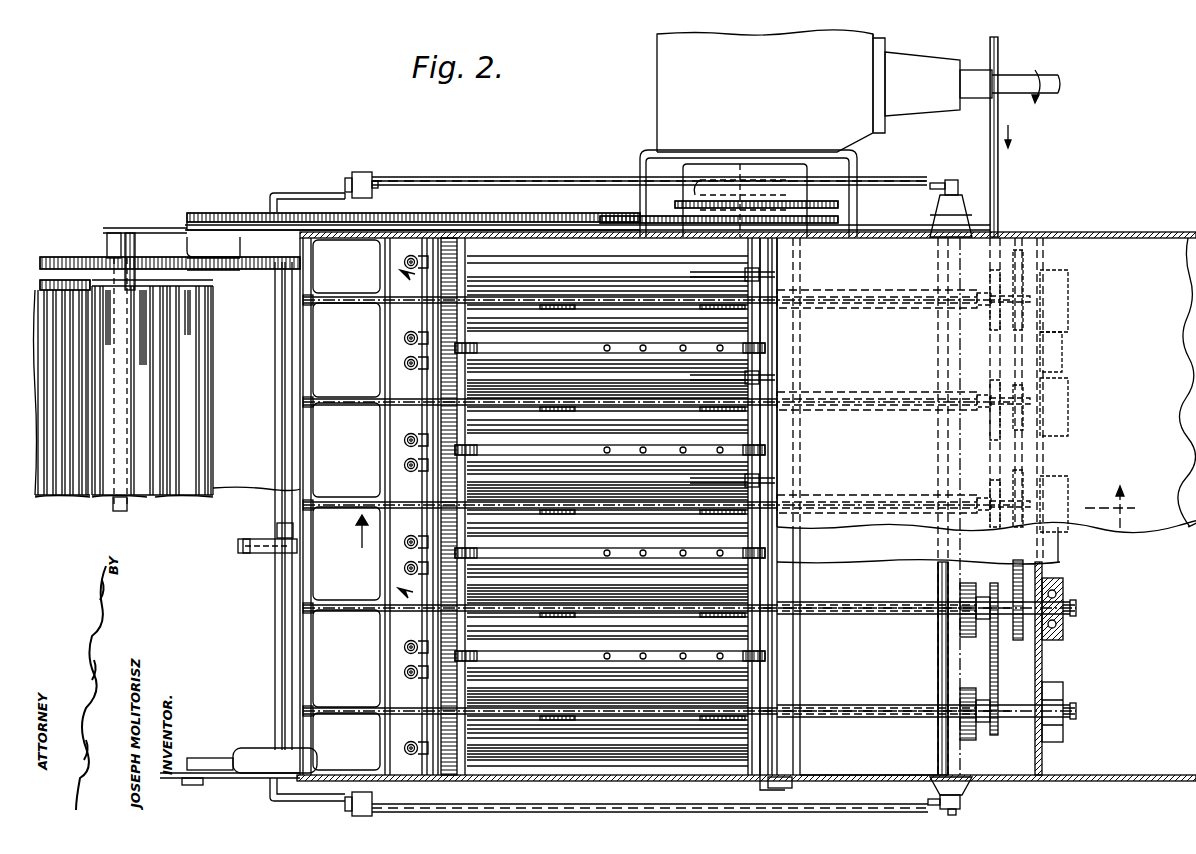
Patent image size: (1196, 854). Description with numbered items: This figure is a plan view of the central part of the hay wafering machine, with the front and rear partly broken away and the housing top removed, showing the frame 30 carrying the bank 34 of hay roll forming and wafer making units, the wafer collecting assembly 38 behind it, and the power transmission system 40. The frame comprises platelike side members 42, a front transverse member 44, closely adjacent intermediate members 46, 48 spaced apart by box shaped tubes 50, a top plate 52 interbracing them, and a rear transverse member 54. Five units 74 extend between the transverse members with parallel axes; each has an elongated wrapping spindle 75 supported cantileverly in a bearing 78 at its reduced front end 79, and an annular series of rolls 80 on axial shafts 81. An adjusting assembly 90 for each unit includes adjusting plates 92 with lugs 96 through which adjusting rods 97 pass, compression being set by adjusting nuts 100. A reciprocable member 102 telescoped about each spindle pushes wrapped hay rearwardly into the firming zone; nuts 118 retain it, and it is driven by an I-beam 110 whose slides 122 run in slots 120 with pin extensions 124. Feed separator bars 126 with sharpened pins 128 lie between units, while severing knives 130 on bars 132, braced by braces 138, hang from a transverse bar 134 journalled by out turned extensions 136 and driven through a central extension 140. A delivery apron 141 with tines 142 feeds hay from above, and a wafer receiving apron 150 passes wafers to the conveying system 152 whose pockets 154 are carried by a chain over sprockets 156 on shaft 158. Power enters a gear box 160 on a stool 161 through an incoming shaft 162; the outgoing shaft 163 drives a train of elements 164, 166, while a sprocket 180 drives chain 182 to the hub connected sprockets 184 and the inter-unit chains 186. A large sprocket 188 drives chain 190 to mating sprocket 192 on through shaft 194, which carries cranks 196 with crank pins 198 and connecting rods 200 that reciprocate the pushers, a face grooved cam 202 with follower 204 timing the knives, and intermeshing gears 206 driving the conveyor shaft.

The frame of machine 30 is at (1051, 235).
The bank of hay roll forming and wafer making units 34 is at (585, 256).
The wafer collecting assembly 38 is at (107, 512).
The power transmission system 40 is at (648, 97).
The side members of the frame 42 is at (155, 228).
The front transversely extending frame member 44 is at (1042, 665).
The intermediate transverse frame member 46 is at (770, 788).
The intermediate transverse frame member 48 is at (755, 766).
The box shaped tubes 50 is at (760, 787).
The top longitudinally extending plate 52 is at (1058, 548).
The rear transversely extending frame member 54 is at (465, 766).
The longitudinally extending units 74 is at (368, 255).
The wrapping spindles 75 is at (596, 304).
The antifriction bearing 78 is at (1058, 380).
The front ends of spindles 79 is at (1068, 283).
The feeding, forming and firming rolls 80 is at (607, 499).
The axial shafts 81 is at (776, 260).
The adjusting assembly 90 is at (396, 428).
The adjusting plates 92 is at (445, 244).
The lugs or bars 96 is at (410, 357).
The adjusting rods 97 is at (404, 261).
The adjusting nuts 100 is at (418, 262).
The reciprocable member 102 is at (847, 312).
The reciprocable I-beam 110 is at (938, 637).
The nuts 118 is at (968, 626).
The slots 120 is at (864, 777).
The slides 122 is at (963, 210).
The pin like extensions 124 is at (952, 180).
The feed separator supporting bars 126 is at (540, 346).
The pins 128 is at (608, 350).
The wafer severing knives or saws 130 is at (510, 308).
The knife supporting bars 132 is at (421, 299).
The transversely extending bar or beam 134 is at (303, 438).
The out turned extensions 136 is at (218, 256).
The transversely extending braces 138 is at (433, 355).
The downwardly extending extension 140 is at (278, 522).
The hay feed delivery apron 141 is at (1156, 528).
The tines 142 is at (705, 270).
The wafer receiving apron 150 is at (222, 490).
The wafer conveying system 152 is at (63, 280).
The conveyor pockets 154 is at (50, 498).
The chain sprockets 156 is at (157, 300).
The chain sprocket bearing shaft 158 is at (127, 507).
The gear box 160 is at (657, 56).
The stool or framing 161 is at (856, 170).
The incoming shaft connection 162 is at (1026, 78).
The outgoing power shaft 163 is at (763, 173).
The power transmitting element 164 is at (693, 184).
The power transmitting element 166 is at (838, 208).
The sprocket 180 is at (1000, 108).
The transversely extending chain 182 is at (998, 160).
The hub connected sprockets 184 is at (1000, 282).
The inter-unit chains 186 is at (1023, 342).
The large diameter sprocket 188 is at (838, 222).
The power transmitting chain 190 is at (494, 216).
The mating sprocket 192 is at (253, 211).
The through running power shaft 194 is at (275, 612).
The cranks 196 is at (315, 193).
The crank pins 198 is at (360, 174).
The connecting rods 200 is at (435, 177).
The face grooved cam 202 is at (253, 554).
The cam follower 204 is at (267, 543).
The intermeshing gears 206 is at (202, 248).